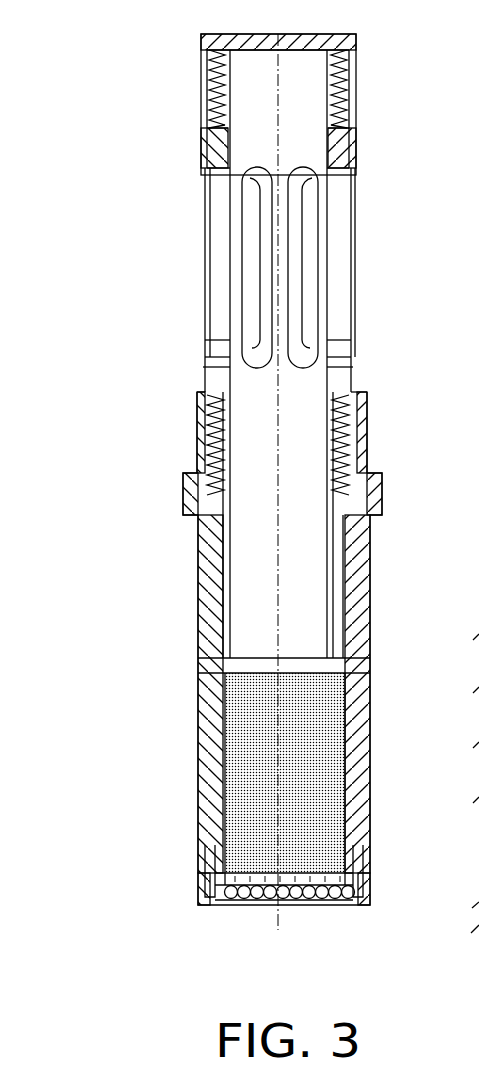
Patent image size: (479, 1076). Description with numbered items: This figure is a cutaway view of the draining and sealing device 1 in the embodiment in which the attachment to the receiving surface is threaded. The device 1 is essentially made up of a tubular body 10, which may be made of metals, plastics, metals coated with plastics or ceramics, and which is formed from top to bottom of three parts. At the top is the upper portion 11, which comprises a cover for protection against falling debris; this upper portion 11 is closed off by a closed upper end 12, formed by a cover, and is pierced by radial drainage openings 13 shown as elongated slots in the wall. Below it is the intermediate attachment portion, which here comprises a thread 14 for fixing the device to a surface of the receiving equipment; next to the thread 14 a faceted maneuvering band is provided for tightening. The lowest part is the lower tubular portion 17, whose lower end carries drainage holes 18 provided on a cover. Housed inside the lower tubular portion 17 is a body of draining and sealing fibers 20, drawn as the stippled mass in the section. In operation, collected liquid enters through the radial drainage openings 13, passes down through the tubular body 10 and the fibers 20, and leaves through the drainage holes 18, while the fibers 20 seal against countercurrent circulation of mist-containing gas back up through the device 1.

The draining and sealing device 1 is at (402, 98).
The tubular body 10 is at (176, 470).
The upper portion 11 is at (278, 288).
The closed upper end 12 is at (244, 80).
The radial drainage openings 13 is at (248, 216).
The thread 14 is at (203, 414).
The lower tubular portion 17 is at (200, 582).
The drainage holes 18 is at (287, 907).
The body of draining and sealing fibers 20 is at (252, 728).